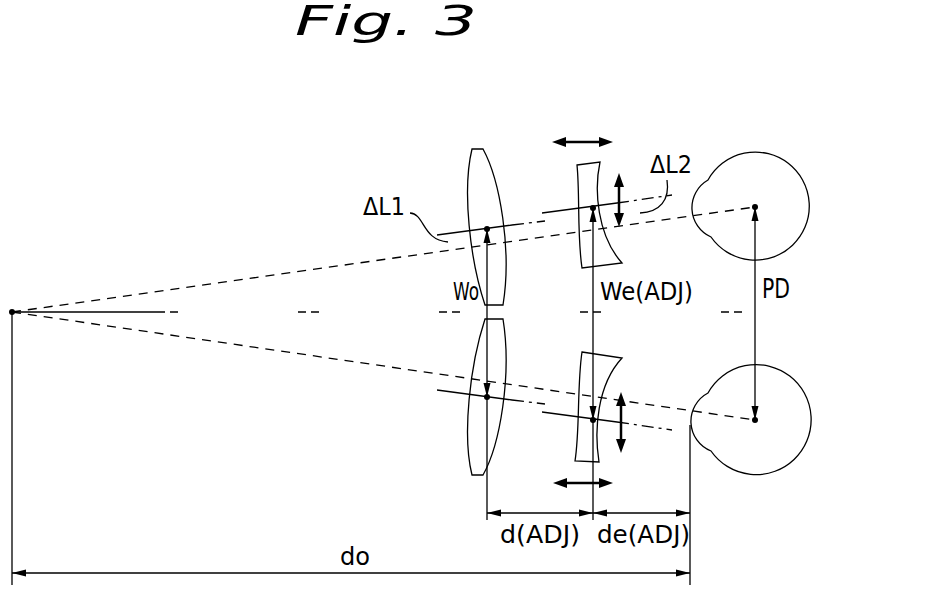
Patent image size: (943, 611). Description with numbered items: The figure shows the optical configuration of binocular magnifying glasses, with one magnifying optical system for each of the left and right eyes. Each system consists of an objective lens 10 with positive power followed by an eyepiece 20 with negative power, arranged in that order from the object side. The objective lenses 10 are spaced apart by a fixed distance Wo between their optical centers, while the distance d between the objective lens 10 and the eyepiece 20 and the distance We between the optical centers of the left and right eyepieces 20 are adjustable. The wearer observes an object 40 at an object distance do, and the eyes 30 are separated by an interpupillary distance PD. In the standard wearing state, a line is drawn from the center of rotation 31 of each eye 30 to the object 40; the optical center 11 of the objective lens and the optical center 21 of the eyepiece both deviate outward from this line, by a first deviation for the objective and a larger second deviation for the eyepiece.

The objective lens 10 is at (478, 150).
The optical center of the objective lens 11 is at (485, 228).
The eyepiece 20 is at (600, 162).
The optical center of the eyepiece 21 is at (592, 207).
The eye 30 is at (752, 152).
The center of rotation of the eye 31 is at (756, 206).
The object 40 is at (13, 310).